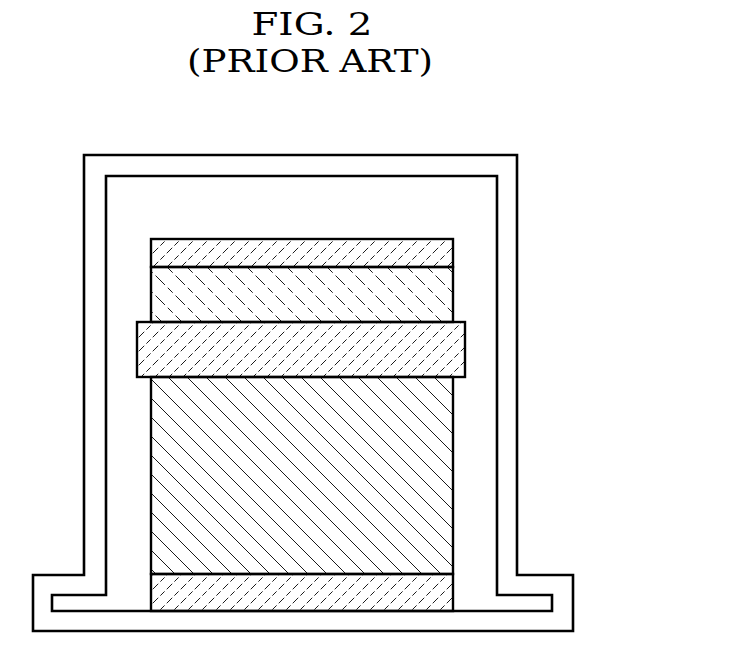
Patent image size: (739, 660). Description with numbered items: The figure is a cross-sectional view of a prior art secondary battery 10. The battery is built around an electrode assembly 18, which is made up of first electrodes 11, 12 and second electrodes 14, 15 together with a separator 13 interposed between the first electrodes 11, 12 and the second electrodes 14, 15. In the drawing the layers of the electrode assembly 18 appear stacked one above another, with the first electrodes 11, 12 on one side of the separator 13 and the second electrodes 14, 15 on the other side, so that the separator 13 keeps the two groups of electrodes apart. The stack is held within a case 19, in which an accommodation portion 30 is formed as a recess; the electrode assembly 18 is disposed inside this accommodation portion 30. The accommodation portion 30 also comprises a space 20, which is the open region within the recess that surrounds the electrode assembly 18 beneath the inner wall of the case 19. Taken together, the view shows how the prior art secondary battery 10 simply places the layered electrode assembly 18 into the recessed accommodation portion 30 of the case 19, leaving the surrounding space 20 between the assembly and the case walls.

The prior art secondary battery 10 is at (558, 138).
The first electrode 11 is at (435, 595).
The first electrode 12 is at (430, 474).
The separator 13 is at (430, 352).
The second electrode 14 is at (430, 295).
The second electrode 15 is at (430, 253).
The electrode assembly 18 is at (577, 245).
The case 19 is at (397, 154).
The space 20 is at (476, 205).
The accommodation portion 30 is at (445, 176).